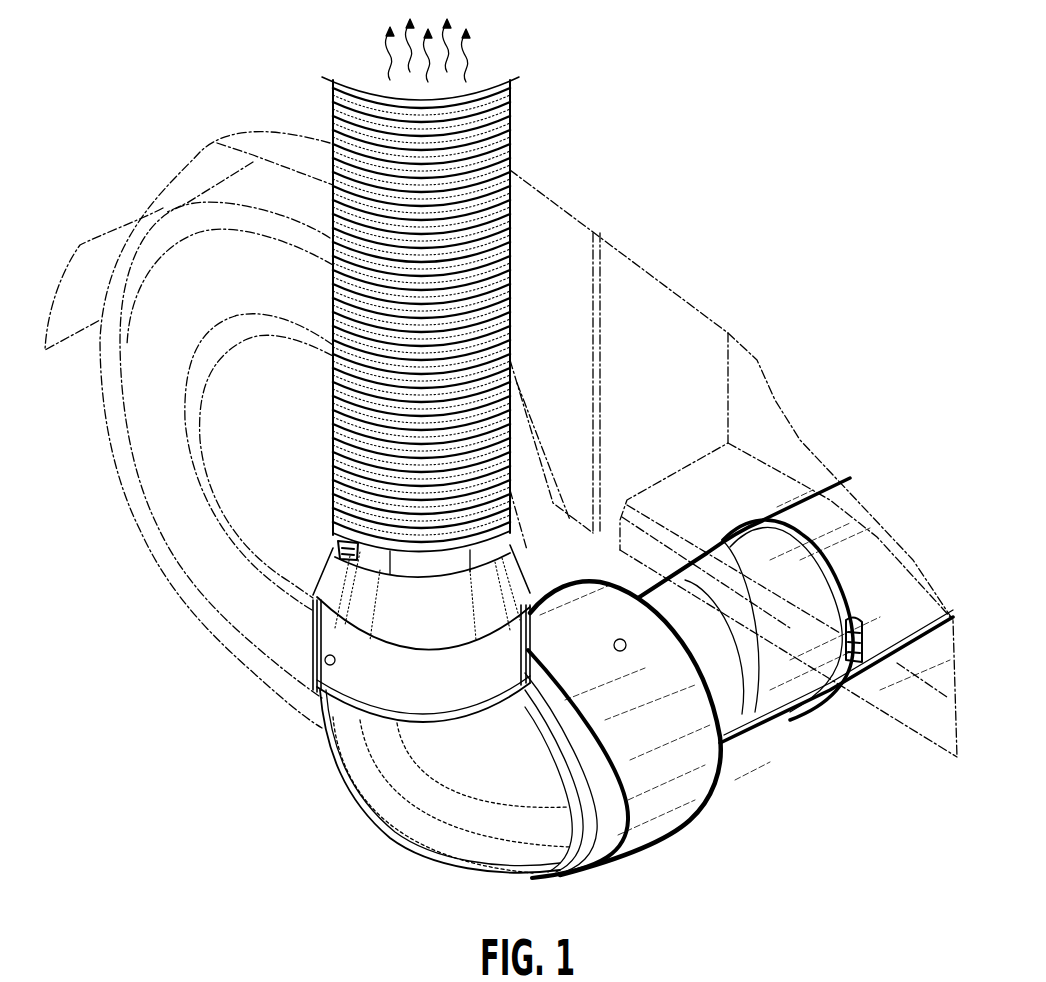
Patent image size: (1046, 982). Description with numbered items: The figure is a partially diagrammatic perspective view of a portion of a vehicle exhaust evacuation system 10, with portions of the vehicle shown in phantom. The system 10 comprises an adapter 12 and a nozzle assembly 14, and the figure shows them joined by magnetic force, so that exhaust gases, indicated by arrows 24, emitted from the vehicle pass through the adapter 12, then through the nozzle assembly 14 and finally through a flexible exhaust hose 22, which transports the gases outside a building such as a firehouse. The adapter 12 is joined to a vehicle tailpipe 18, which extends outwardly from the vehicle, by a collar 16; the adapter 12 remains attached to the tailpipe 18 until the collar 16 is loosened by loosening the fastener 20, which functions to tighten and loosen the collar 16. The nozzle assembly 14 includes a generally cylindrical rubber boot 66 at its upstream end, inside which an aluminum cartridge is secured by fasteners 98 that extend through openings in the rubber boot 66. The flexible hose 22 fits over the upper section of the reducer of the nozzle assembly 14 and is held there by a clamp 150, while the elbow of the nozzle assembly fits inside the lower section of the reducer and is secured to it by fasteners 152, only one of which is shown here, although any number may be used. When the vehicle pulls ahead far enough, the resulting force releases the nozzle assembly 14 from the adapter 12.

The vehicle exhaust evacuation system 10 is at (802, 765).
The adapter 12 is at (803, 697).
The nozzle assembly 14 is at (432, 866).
The collar 16 is at (837, 593).
The vehicle tailpipe 18 is at (778, 513).
The fastener 20 is at (858, 627).
The flexible exhaust hose 22 is at (510, 307).
The arrows 24 is at (463, 75).
The rubber boot 66 is at (665, 708).
The fasteners 98 is at (614, 643).
The clamp 150 is at (335, 530).
The fasteners 152 is at (325, 662).